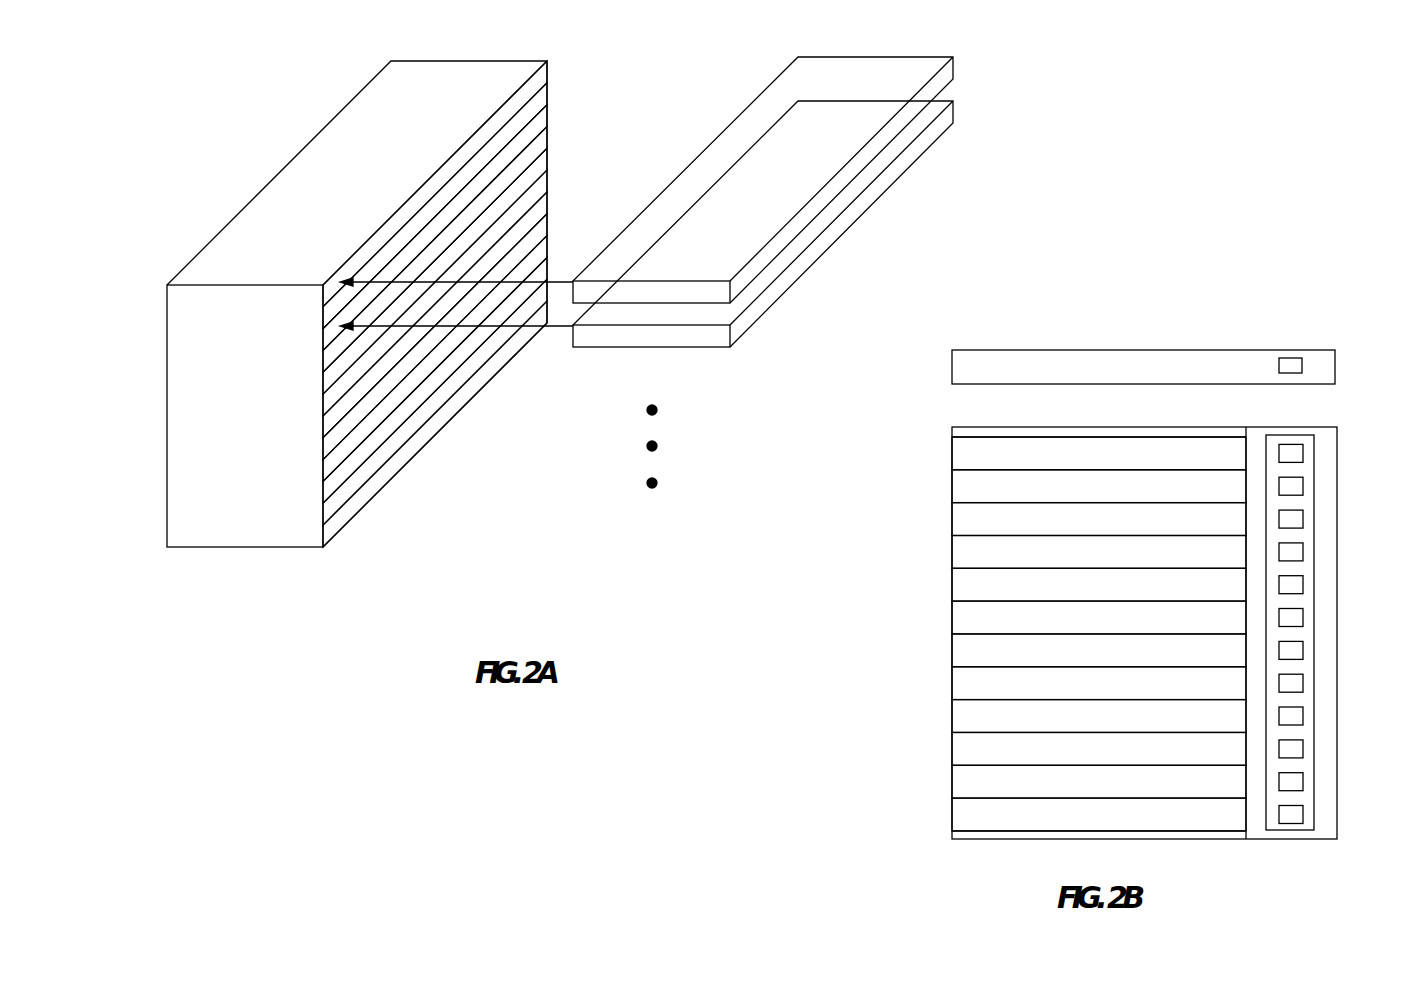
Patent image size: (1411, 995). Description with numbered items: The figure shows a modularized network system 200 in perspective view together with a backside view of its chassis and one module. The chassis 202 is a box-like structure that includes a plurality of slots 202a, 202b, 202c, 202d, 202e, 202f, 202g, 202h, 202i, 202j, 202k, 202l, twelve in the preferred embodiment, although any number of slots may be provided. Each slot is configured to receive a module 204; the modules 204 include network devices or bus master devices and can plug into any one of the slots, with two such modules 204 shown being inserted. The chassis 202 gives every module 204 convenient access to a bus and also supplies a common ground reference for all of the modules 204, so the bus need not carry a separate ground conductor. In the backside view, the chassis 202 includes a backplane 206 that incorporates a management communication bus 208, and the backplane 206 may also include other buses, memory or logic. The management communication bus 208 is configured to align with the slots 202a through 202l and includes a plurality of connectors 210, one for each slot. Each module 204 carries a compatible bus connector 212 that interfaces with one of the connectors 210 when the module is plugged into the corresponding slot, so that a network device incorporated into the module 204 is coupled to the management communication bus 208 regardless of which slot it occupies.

In FIG. 2A, the network system 200 is at (630, 327).
In FIG. 2A, the chassis 202 is at (357, 331).
In FIG. 2B, the chassis 202 is at (1132, 623).
In FIG. 2A, the slot 202a is at (323, 296).
In FIG. 2B, the slot 202a is at (952, 453).
In FIG. 2A, the slot 202b is at (323, 318).
In FIG. 2B, the slot 202b is at (952, 486).
In FIG. 2A, the slot 202c is at (323, 340).
In FIG. 2B, the slot 202c is at (952, 519).
In FIG. 2A, the slot 202d is at (323, 361).
In FIG. 2B, the slot 202d is at (952, 552).
In FIG. 2A, the slot 202e is at (323, 383).
In FIG. 2B, the slot 202e is at (952, 585).
In FIG. 2A, the slot 202f is at (323, 405).
In FIG. 2B, the slot 202f is at (952, 618).
In FIG. 2A, the slot 202g is at (323, 427).
In FIG. 2B, the slot 202g is at (952, 650).
In FIG. 2A, the slot 202h is at (323, 449).
In FIG. 2B, the slot 202h is at (952, 683).
In FIG. 2A, the slot 202i is at (323, 471).
In FIG. 2B, the slot 202i is at (952, 716).
In FIG. 2A, the slot 202j is at (323, 492).
In FIG. 2B, the slot 202j is at (952, 749).
In FIG. 2A, the slot 202k is at (323, 514).
In FIG. 2B, the slot 202k is at (952, 782).
In FIG. 2A, the slot 202l is at (323, 536).
In FIG. 2B, the slot 202l is at (952, 814).
In FIG. 2A, the module 204 is at (787, 87).
In FIG. 2B, the module 204 is at (1131, 351).
In FIG. 2B, the backplane 206 is at (1255, 430).
In FIG. 2B, the management communication bus 208 is at (1332, 613).
In FIG. 2B, the connector 210 is at (1303, 453).
In FIG. 2B, the bus connector 212 is at (1293, 357).